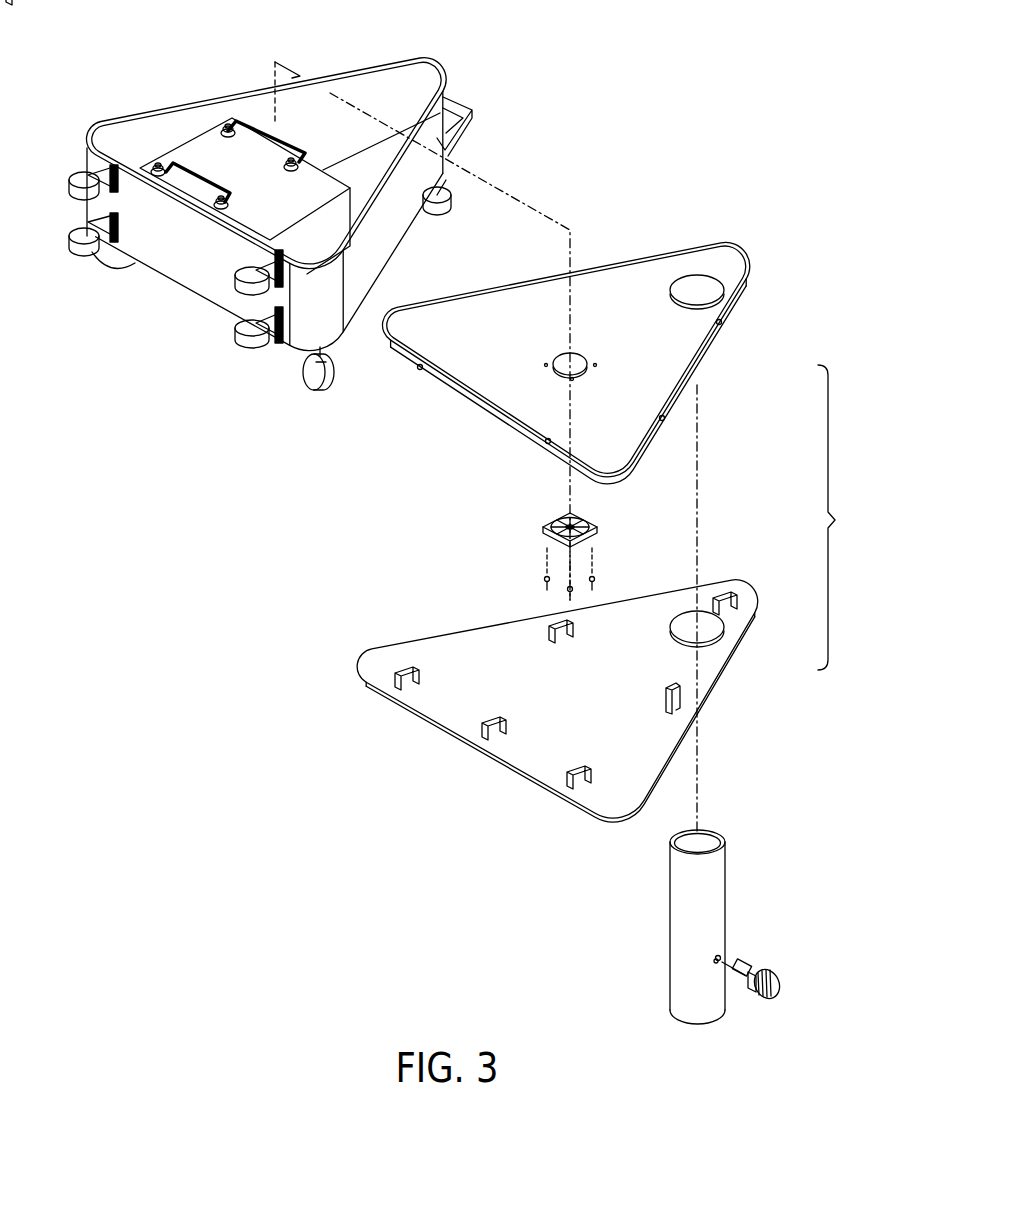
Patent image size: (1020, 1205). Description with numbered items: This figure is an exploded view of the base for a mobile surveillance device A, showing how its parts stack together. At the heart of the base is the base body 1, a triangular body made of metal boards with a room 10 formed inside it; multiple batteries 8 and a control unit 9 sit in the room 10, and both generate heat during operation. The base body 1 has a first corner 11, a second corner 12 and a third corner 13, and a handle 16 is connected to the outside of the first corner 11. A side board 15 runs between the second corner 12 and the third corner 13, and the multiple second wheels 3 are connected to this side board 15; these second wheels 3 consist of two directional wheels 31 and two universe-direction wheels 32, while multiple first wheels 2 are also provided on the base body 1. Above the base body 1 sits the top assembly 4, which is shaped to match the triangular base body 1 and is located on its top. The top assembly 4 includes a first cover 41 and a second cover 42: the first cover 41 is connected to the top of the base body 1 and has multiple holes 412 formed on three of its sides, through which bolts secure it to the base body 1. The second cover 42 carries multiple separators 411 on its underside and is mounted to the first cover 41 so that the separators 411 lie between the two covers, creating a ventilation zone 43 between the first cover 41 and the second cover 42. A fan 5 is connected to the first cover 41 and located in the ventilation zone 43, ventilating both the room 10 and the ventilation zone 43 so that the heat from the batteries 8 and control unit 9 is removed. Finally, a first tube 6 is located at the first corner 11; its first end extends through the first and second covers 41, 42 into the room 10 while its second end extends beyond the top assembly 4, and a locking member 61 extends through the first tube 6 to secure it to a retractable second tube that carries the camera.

The base body 1 is at (315, 232).
The first wheels 2 is at (467, 221).
The second wheels 3 is at (234, 355).
The top assembly 4 is at (844, 517).
The fan 5 is at (526, 530).
The first tube 6 is at (710, 930).
The batteries 8 is at (176, 130).
The control unit 9 is at (239, 100).
The room 10 is at (402, 112).
The first corner 11 is at (445, 65).
The second corner 12 is at (68, 152).
The third corner 13 is at (299, 333).
The side board 15 is at (180, 280).
The handle 16 is at (474, 110).
The directional wheels 31 is at (66, 235).
The universe-direction wheels 32 is at (255, 358).
The first cover 41 is at (585, 353).
The second cover 42 is at (400, 411).
The ventilation zone 43 is at (700, 580).
The separators 411 is at (418, 664).
The holes 412 is at (724, 322).
The locking member 61 is at (777, 992).
The mobile surveillance device A is at (213, 698).